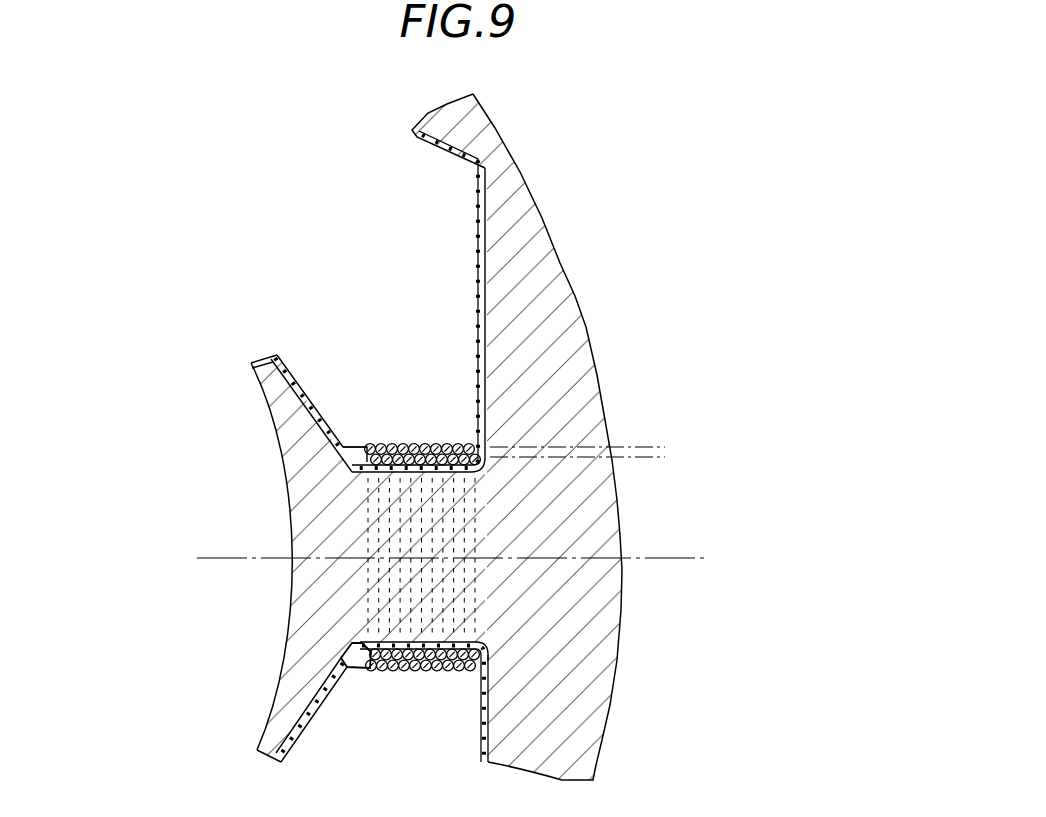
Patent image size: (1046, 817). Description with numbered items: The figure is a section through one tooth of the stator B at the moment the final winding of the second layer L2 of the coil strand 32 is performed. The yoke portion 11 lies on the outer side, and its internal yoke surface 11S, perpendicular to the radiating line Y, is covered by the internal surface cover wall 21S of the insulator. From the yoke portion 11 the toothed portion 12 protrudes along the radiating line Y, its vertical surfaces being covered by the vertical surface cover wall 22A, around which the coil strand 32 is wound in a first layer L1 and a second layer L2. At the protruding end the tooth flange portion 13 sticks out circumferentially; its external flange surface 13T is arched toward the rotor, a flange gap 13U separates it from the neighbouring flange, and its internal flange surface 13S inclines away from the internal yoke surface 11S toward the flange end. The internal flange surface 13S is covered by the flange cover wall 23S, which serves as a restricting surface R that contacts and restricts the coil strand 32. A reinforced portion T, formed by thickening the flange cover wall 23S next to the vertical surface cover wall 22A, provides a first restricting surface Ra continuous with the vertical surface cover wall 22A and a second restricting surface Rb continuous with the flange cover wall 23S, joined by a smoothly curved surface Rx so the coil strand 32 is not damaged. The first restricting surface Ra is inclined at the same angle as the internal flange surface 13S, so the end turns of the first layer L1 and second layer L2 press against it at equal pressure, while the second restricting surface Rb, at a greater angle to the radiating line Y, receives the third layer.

The stator B is at (529, 440).
The yoke portion 11 is at (502, 440).
The internal yoke surface 11S is at (486, 331).
The internal surface cover wall 21S is at (479, 259).
The vertical surface cover wall 22A is at (443, 671).
The toothed portion 12 is at (423, 415).
The coil strand 32 is at (404, 443).
The tooth flange portion 13 is at (333, 545).
The external flange surface 13T is at (291, 510).
The flange gap 13U is at (230, 363).
The internal flange surface 13S is at (334, 412).
The flange cover wall 23S is at (294, 372).
The curved surface Rx is at (366, 433).
The reinforced portion T is at (358, 675).
The first restricting surface Ra is at (367, 671).
The second restricting surface Rb is at (354, 674).
The restricting surface R is at (311, 743).
The radiating line Y is at (462, 557).
The first layer L1 is at (654, 460).
The second layer L2 is at (652, 446).